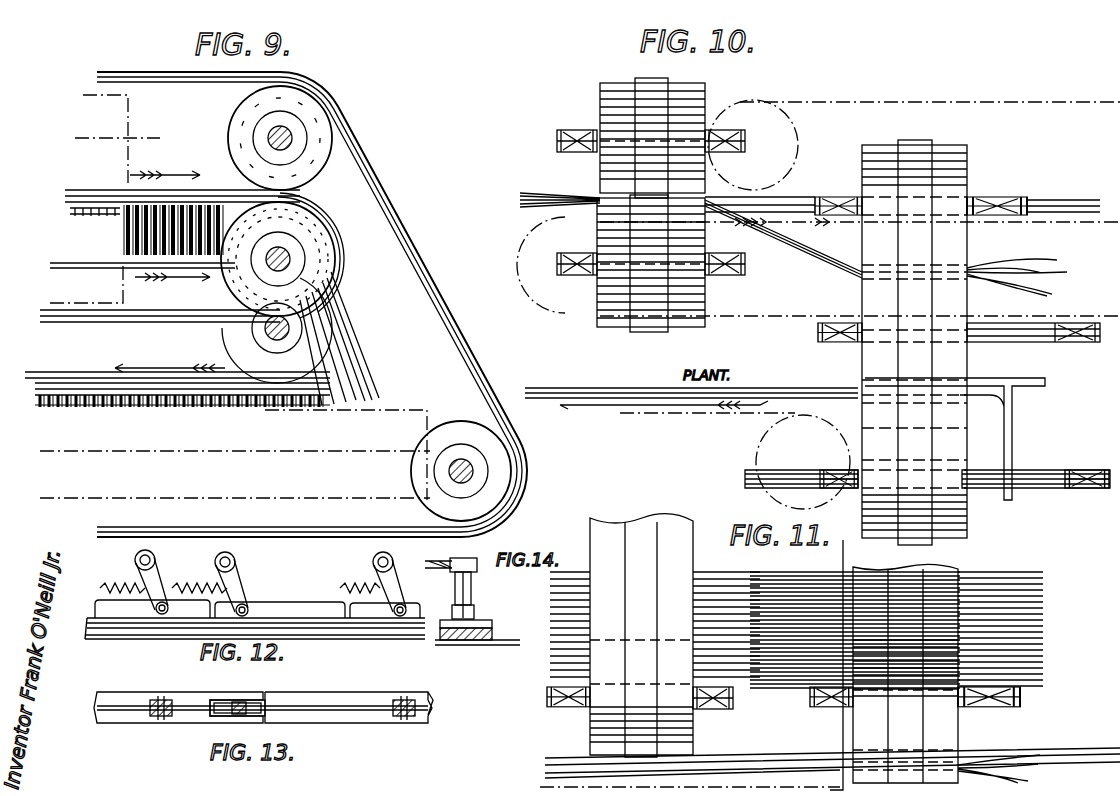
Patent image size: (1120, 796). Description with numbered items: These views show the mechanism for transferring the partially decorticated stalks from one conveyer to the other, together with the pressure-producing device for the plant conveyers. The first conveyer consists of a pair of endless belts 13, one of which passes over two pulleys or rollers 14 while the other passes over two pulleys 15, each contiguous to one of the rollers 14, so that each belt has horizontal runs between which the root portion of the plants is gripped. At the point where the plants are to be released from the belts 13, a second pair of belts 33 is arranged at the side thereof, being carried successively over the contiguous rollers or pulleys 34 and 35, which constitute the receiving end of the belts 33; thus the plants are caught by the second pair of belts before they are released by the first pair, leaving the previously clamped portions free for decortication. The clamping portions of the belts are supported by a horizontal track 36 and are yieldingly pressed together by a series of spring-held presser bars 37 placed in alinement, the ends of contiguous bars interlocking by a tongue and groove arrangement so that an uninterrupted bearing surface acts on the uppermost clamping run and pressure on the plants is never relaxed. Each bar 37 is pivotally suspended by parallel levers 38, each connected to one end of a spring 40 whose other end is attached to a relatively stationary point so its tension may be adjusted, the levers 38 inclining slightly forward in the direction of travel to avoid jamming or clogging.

In FIG. 9, the endless belts 13 is at (329, 97).
In FIG. 10, the endless belts 13 is at (614, 90).
In FIG. 11, the endless belts 13 is at (653, 635).
In FIG. 9, the pulleys or rollers 14 is at (247, 112).
In FIG. 9, the pulleys 15 is at (233, 276).
In FIG. 9, the belts 33 is at (67, 382).
In FIG. 10, the belts 33 is at (874, 152).
In FIG. 11, the belts 33 is at (940, 728).
In FIG. 9, the roller or pulley 34 is at (320, 206).
In FIG. 9, the pulley 35 is at (315, 334).
In FIG. 12, the horizontal track 36 is at (349, 638).
In FIG. 14, the horizontal track 36 is at (467, 642).
In FIG. 12, the bars 37 is at (182, 610).
In FIG. 14, the bars 37 is at (482, 624).
In FIG. 13, the bars 37 is at (141, 698).
In FIG. 12, the levers 38 is at (412, 582).
In FIG. 14, the levers 38 is at (463, 588).
In FIG. 13, the levers 38 is at (164, 722).
In FIG. 12, the spring 40 is at (240, 579).